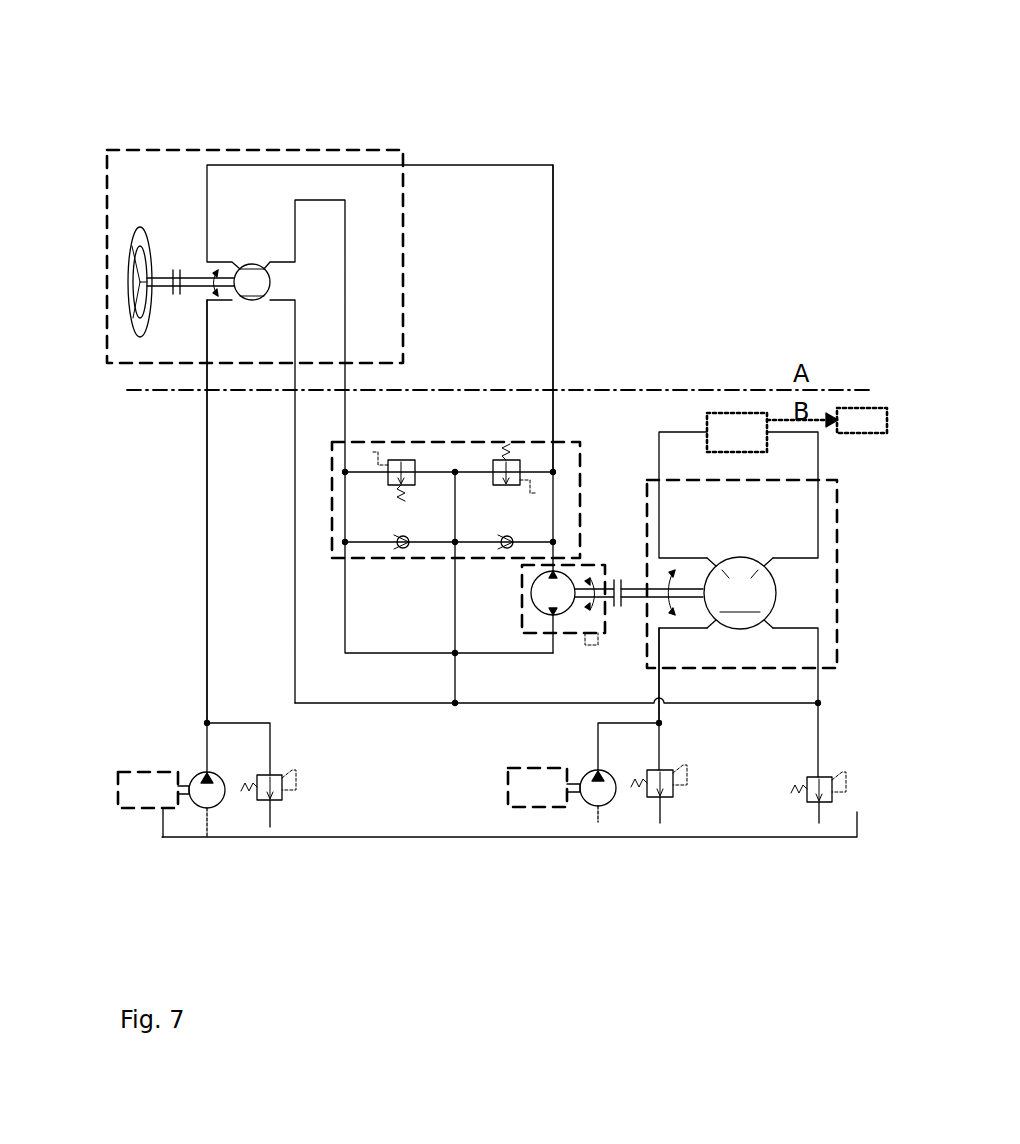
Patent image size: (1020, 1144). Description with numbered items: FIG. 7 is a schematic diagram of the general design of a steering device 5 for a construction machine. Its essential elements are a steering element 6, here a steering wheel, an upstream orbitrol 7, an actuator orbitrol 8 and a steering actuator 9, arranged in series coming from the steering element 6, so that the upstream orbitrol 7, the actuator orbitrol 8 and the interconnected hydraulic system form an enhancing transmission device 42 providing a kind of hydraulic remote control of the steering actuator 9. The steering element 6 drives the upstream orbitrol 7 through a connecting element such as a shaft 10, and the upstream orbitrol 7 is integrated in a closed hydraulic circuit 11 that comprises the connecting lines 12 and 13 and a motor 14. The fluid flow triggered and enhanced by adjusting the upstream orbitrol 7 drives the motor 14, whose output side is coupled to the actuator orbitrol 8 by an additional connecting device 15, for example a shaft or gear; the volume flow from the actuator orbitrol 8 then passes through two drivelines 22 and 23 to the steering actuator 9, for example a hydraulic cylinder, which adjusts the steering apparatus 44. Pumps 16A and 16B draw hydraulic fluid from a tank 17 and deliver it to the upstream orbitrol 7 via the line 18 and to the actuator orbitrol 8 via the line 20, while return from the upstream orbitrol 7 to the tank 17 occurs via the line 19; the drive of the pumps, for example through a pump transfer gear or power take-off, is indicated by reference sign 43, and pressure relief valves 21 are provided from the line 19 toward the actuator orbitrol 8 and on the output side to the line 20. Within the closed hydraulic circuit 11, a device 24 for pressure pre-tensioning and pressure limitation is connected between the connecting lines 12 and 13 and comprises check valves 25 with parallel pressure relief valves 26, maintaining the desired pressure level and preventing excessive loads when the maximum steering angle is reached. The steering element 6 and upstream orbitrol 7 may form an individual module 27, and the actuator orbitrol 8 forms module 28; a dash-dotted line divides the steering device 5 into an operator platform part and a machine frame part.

The steering device 5 is at (616, 256).
The steering element 6 is at (128, 290).
The upstream orbitrol 7 is at (248, 276).
The actuator orbitrol 8 is at (753, 600).
The steering actuator 9 is at (745, 413).
The steering shaft 10 is at (190, 285).
The closed hydraulic circuit 11 is at (495, 165).
The connecting line 12 is at (310, 200).
The connecting line 13 is at (420, 165).
The motor 14 is at (545, 625).
The connecting device 15 is at (633, 587).
The pump 16A is at (210, 797).
The pump 16B is at (588, 797).
The tank 17 is at (630, 835).
The line 18 is at (205, 620).
The line 19 is at (350, 705).
The line 20 is at (657, 690).
The pressure relief valve 21 is at (657, 797).
The driveline 22 is at (660, 530).
The driveline 23 is at (815, 530).
The device for pressure pre-tensioning 24 is at (567, 486).
The check valve 25 is at (403, 550).
The pressure relief valve 26 is at (406, 465).
The module 27 is at (188, 150).
The module 28 is at (835, 480).
The enhancing transmission device 42 is at (281, 412).
The pump drive 43 is at (118, 810).
The steering apparatus 44 is at (850, 408).